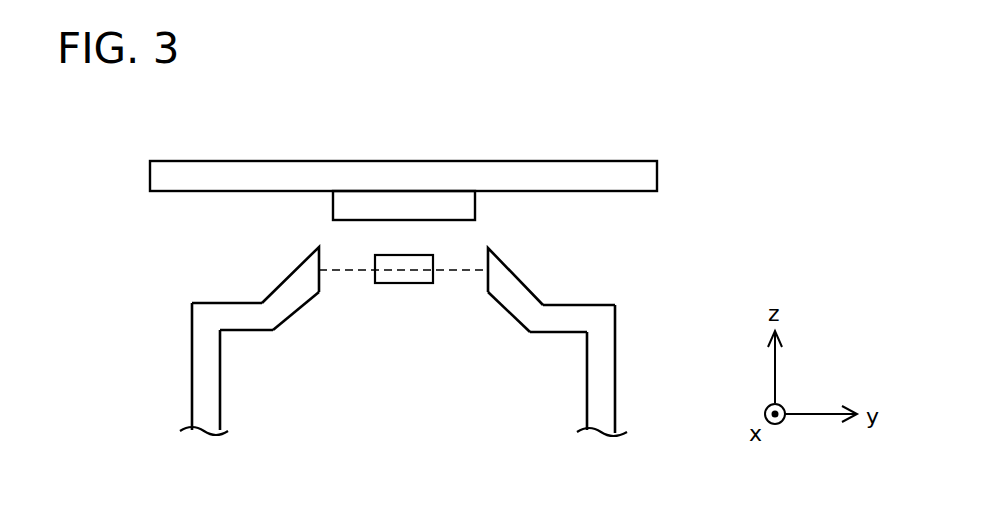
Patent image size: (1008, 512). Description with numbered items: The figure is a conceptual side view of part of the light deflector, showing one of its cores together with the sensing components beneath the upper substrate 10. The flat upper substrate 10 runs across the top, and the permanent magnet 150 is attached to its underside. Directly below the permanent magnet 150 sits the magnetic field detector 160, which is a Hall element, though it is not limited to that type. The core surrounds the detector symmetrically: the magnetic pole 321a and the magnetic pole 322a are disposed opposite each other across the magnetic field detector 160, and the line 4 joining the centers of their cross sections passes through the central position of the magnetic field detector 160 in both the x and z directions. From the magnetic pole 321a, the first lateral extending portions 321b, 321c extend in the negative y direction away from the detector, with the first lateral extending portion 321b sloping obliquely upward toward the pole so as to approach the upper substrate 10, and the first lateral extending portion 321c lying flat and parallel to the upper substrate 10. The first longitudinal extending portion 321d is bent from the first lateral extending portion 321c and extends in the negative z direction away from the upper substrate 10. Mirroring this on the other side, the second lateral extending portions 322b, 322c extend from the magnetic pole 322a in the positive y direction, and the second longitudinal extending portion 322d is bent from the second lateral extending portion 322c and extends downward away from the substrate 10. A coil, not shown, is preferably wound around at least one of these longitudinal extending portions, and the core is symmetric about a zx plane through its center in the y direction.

The upper substrate 10 is at (638, 178).
The permanent magnet 150 is at (425, 203).
The magnetic field detector 160 is at (403, 277).
The line 4 is at (460, 270).
The magnetic pole 321a is at (329, 254).
The first lateral extending portion 321b is at (297, 283).
The first lateral extending portion 321c is at (245, 317).
The first longitudinal extending portion 321d is at (205, 373).
The magnetic pole 322a is at (487, 258).
The second lateral extending portion 322b is at (513, 280).
The second lateral extending portion 322c is at (562, 318).
The second longitudinal extending portion 322d is at (600, 373).